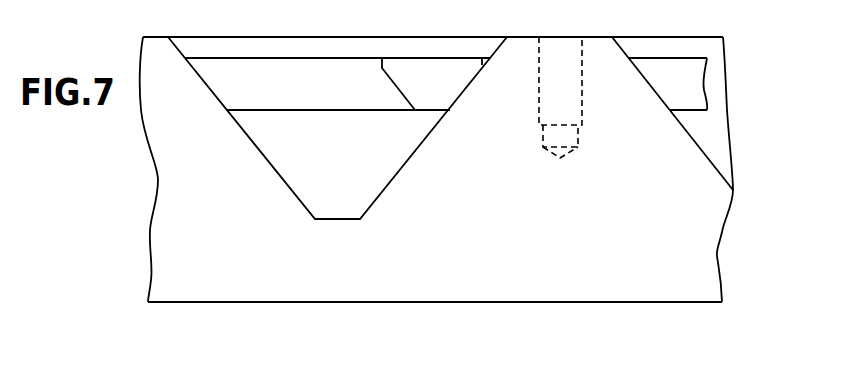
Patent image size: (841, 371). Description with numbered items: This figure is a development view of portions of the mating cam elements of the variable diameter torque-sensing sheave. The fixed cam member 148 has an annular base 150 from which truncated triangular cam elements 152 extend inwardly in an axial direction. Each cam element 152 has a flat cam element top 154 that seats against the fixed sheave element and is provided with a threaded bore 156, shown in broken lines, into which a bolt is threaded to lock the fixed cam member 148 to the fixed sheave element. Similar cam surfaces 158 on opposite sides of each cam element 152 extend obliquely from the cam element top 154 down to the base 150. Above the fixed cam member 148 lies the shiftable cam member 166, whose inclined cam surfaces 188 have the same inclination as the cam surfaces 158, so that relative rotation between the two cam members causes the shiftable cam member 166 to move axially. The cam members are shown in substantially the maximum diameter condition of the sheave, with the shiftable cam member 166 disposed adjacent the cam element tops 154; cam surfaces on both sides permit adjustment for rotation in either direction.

The fixed cam member 148 is at (705, 273).
The annular base 150 is at (355, 298).
The truncated triangular cam element 152 is at (503, 60).
The cam element top 154 is at (599, 36).
The threaded bore 156 is at (540, 56).
The cam surface 158 is at (376, 197).
The shiftable cam member 166 is at (230, 56).
The inclined cam surface 188 is at (459, 96).